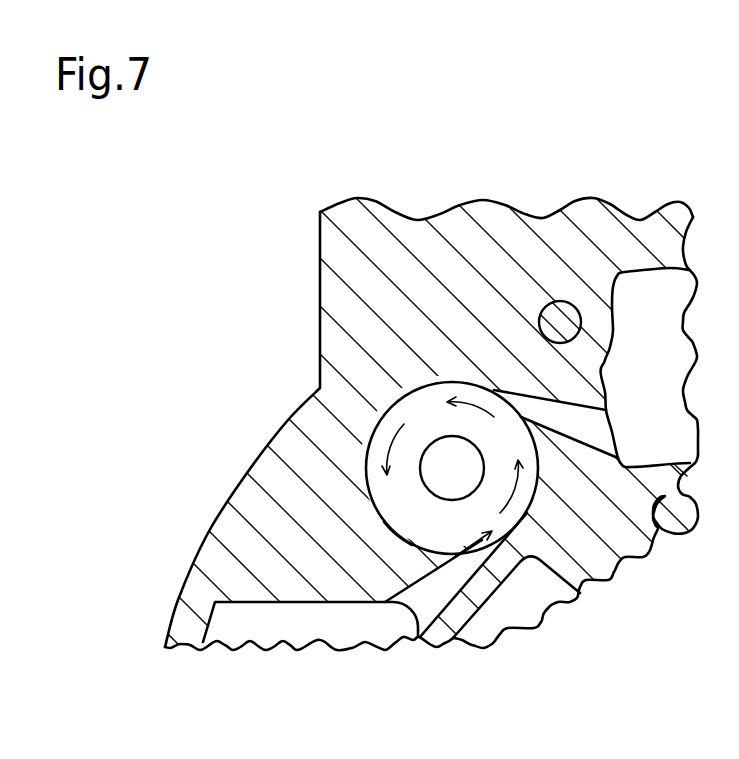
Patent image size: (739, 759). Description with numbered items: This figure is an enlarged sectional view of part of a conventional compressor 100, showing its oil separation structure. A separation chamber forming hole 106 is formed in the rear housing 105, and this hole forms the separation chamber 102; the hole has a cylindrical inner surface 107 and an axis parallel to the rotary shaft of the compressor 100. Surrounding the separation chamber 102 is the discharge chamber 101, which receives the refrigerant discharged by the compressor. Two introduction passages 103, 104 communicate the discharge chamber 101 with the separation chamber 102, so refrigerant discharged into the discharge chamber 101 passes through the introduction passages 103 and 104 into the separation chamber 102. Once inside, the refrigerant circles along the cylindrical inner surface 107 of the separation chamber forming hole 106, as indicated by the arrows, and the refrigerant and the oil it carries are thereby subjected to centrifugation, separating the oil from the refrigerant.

The compressor 100 is at (249, 222).
The discharge chamber 101 is at (431, 459).
The separation chamber 102 is at (452, 477).
The introduction passage 103 is at (417, 579).
The introduction passage 104 is at (536, 406).
The rear housing 105 is at (333, 281).
The separation chamber forming hole 106 is at (416, 386).
The cylindrical inner surface 107 is at (384, 522).